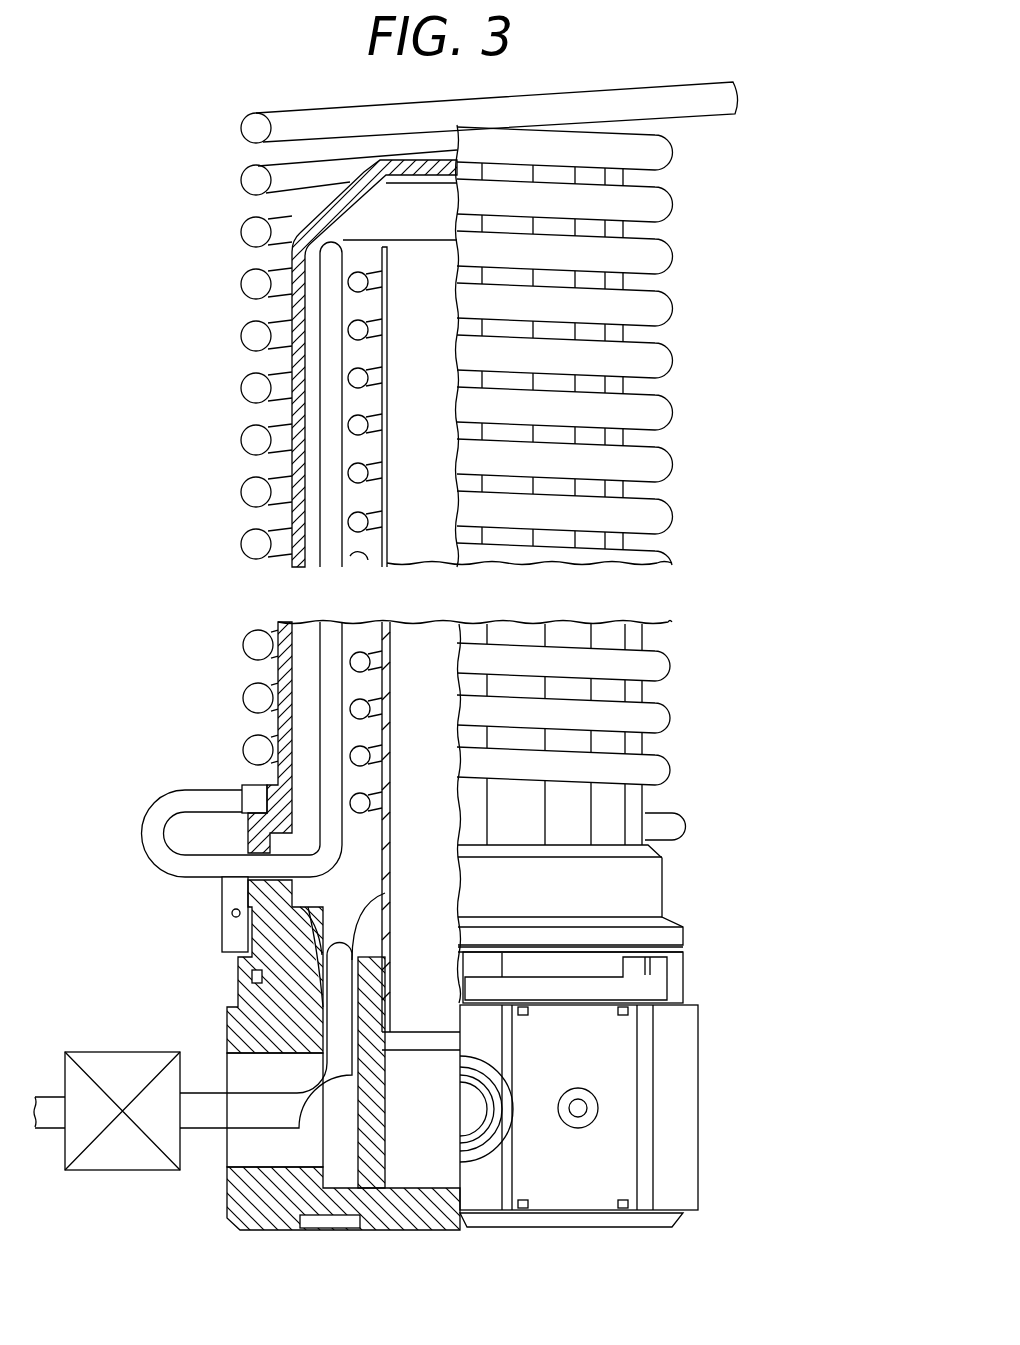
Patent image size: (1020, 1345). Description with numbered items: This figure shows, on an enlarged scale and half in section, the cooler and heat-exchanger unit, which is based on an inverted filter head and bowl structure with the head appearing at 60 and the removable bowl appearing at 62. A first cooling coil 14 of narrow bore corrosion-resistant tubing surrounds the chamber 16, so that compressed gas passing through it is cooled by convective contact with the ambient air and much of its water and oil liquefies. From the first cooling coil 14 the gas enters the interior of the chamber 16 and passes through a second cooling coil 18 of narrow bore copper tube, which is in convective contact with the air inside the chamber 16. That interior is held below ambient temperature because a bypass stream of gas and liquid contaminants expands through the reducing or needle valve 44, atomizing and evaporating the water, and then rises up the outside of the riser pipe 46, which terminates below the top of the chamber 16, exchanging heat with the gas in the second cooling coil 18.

The first cooling coil 14 is at (250, 641).
The chamber 16 is at (292, 463).
The second cooling coil 18 is at (345, 286).
The reducing or needle valve 44 is at (116, 1062).
The riser pipe 46 is at (387, 870).
The filter head 60 is at (673, 1140).
The removable bowl 62 is at (645, 887).